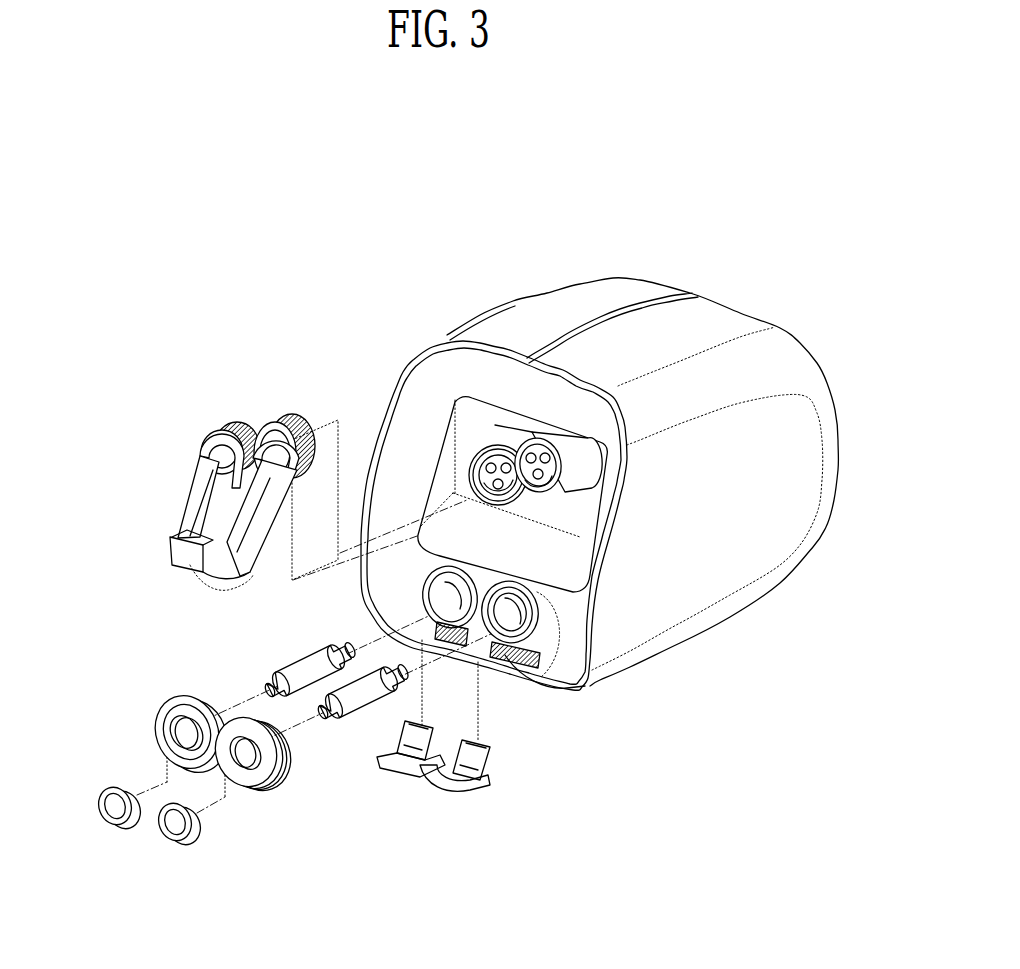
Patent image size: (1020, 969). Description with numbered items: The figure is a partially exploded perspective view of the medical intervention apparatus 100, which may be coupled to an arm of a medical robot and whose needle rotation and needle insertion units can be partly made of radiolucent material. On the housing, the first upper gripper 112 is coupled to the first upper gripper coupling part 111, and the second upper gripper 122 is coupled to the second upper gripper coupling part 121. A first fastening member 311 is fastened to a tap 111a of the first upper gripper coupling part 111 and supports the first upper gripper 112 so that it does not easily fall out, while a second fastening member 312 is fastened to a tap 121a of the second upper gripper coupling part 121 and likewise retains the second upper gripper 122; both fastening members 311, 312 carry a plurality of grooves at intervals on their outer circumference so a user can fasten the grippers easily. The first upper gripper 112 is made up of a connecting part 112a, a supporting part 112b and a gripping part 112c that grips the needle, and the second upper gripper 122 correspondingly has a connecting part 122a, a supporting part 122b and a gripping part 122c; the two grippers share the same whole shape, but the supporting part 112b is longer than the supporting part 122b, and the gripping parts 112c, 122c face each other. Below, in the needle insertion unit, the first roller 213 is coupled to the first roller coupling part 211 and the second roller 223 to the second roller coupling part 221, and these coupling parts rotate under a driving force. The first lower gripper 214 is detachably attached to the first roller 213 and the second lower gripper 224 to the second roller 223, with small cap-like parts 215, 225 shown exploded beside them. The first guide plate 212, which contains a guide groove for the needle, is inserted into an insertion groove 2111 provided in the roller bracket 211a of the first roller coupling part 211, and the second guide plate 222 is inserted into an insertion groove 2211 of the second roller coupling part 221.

The medical intervention apparatus 100 is at (277, 271).
The first upper gripper coupling part 111 is at (518, 470).
The tap 111a is at (560, 450).
The first upper gripper 112 is at (245, 557).
The connecting part 112a is at (290, 483).
The supporting part 112b is at (240, 520).
The gripping part 112c is at (211, 591).
The second upper gripper coupling part 121 is at (500, 440).
The tap 121a is at (500, 445).
The second upper gripper 122 is at (151, 506).
The connecting part 122a is at (197, 456).
The supporting part 122b is at (190, 497).
The gripping part 122c is at (176, 552).
The first roller coupling part 211 is at (588, 680).
The roller bracket 211a is at (590, 640).
The insertion groove 2111 is at (531, 697).
The first guide plate 212 is at (478, 793).
The first roller 213 is at (370, 698).
The first lower gripper 214 is at (277, 790).
The cap 215 is at (165, 832).
The second roller coupling part 221 is at (423, 603).
The insertion groove 2211 is at (505, 658).
The second guide plate 222 is at (376, 778).
The second roller 223 is at (309, 692).
The second lower gripper 224 is at (150, 700).
The cap 225 is at (108, 812).
The first fastening member 311 is at (300, 433).
The second fastening member 312 is at (214, 440).